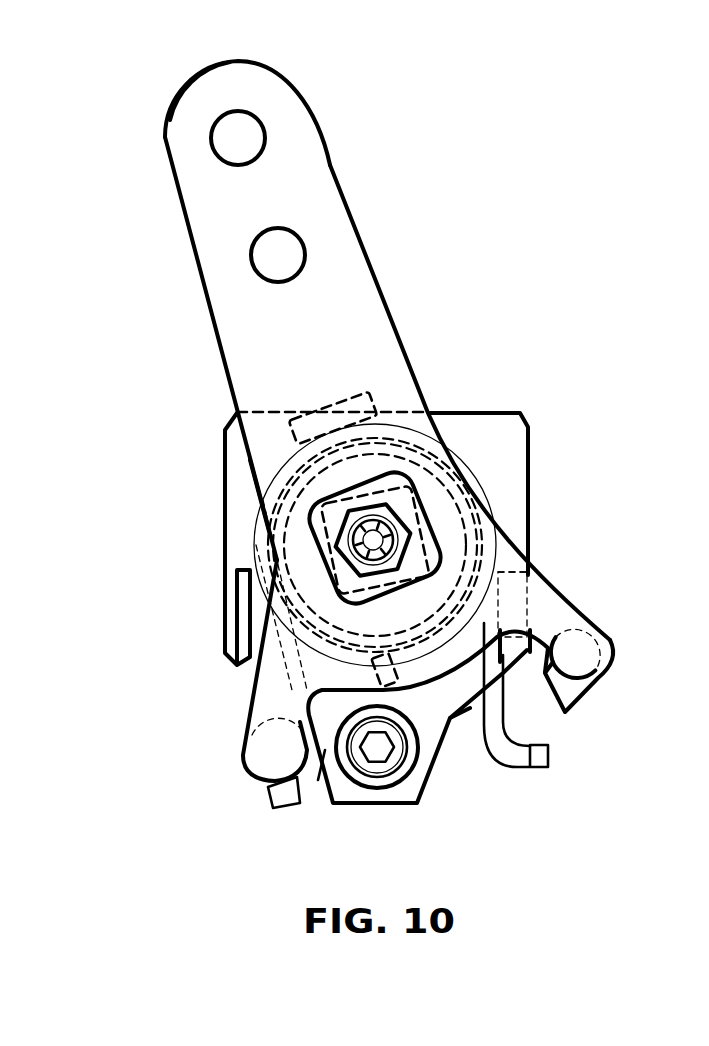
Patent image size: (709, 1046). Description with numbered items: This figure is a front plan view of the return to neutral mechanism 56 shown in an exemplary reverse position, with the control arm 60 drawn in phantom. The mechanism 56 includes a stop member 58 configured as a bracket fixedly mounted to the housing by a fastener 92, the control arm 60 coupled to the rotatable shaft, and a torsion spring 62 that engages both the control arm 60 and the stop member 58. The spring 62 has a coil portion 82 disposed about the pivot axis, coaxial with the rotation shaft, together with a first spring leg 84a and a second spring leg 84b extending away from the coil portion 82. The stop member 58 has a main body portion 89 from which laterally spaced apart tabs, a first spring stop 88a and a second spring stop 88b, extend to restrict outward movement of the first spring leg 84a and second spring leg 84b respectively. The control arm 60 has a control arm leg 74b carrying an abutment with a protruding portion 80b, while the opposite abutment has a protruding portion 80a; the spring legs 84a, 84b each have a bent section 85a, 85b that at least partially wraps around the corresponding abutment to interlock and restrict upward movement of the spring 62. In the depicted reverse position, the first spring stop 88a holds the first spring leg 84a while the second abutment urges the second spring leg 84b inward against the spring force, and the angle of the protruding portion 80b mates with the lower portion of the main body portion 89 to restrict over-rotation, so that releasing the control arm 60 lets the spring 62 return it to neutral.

The return to neutral mechanism 56 is at (143, 73).
The stop member 58 is at (545, 406).
The control arm 60 is at (385, 241).
The spring 62 is at (234, 493).
The control arm leg 74b is at (262, 712).
The protruding portion 80a is at (585, 692).
The protruding portion 80b is at (323, 790).
The coil portion 82 is at (268, 550).
The first spring leg 84a is at (490, 613).
The second spring leg 84b is at (243, 680).
The bent section 85a is at (517, 770).
The bent section 85b is at (268, 793).
The first spring stop 88a is at (545, 577).
The second spring stop 88b is at (236, 597).
The main body portion 89 is at (425, 708).
The fastener 92 is at (380, 748).